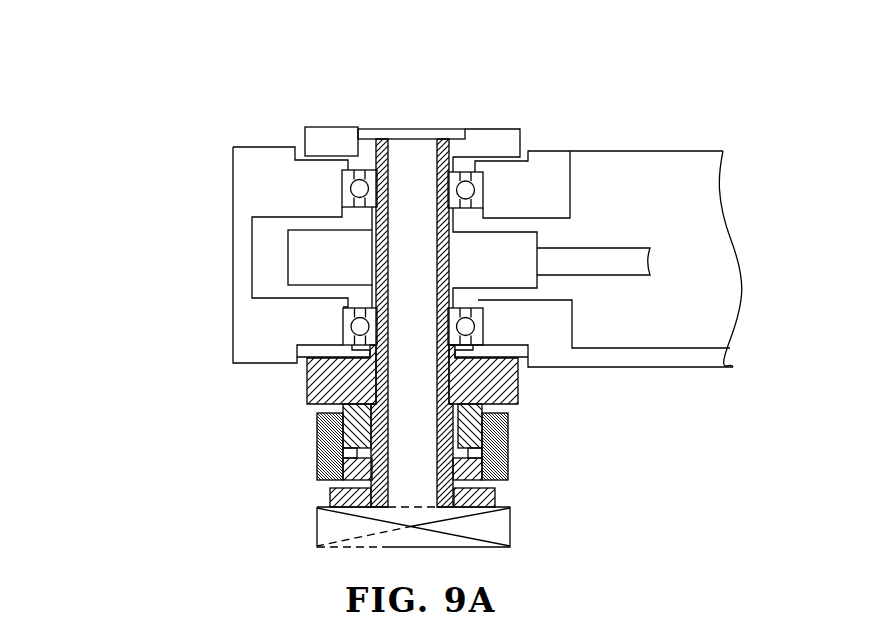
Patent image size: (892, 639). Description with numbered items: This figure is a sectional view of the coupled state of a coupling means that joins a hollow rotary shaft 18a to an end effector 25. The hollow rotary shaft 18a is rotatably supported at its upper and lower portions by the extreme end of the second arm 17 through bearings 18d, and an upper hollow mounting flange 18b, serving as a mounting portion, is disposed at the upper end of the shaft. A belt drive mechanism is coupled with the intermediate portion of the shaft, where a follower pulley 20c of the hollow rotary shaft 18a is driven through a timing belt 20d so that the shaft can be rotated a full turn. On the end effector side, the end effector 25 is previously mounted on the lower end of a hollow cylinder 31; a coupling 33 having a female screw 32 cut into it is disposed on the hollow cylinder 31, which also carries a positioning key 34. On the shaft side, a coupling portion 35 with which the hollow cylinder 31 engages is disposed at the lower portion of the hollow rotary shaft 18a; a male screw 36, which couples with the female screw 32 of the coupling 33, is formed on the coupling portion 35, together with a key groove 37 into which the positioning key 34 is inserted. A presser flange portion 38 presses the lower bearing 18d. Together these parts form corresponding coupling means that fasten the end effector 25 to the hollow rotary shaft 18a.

The second arm 17 is at (613, 165).
The hollow rotary shaft 18a is at (372, 218).
The upper hollow mounting flange 18b is at (332, 133).
The bearings 18d is at (355, 195).
The follower pulley 20c is at (310, 257).
The timing belt 20d is at (637, 253).
The end effector 25 is at (333, 535).
The hollow cylinder 31 is at (372, 478).
The female screw 32 is at (229, 412).
The coupling 33 is at (317, 450).
The positioning key 34 is at (600, 464).
The coupling portion 35 is at (510, 430).
The male screw 36 is at (317, 423).
The key groove 37 is at (510, 455).
The presser flange portion 38 is at (518, 385).